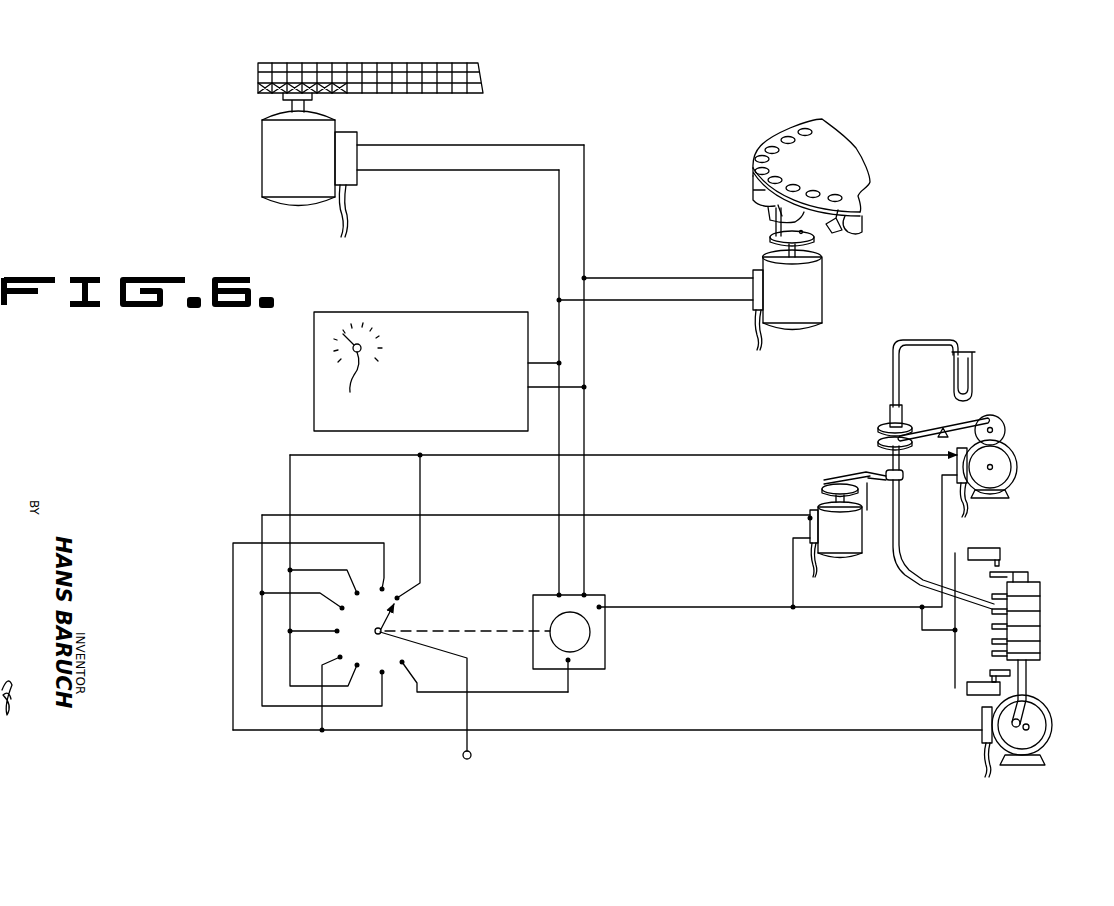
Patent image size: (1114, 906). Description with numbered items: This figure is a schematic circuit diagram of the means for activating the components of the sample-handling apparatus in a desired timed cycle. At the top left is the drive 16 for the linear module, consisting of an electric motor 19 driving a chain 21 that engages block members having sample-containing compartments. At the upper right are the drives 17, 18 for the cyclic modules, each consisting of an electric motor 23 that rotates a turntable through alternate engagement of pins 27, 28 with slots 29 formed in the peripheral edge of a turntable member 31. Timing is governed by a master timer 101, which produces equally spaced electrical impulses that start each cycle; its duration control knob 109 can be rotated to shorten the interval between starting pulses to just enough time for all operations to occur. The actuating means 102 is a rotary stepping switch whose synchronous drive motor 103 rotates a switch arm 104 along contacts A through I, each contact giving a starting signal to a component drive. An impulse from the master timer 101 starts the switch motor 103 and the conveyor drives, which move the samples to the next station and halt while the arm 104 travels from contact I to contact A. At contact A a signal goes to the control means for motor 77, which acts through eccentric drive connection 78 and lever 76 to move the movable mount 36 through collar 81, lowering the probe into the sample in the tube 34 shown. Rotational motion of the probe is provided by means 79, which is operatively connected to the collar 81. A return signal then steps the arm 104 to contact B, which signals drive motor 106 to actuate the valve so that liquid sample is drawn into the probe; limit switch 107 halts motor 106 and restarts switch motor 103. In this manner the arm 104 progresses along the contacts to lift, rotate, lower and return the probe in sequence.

The drive 16 is at (281, 176).
The electric motor 19 is at (300, 203).
The chain 21 is at (381, 66).
The drive 17 is at (826, 235).
The drive 18 is at (813, 235).
The electric motor 23 is at (806, 321).
The pin 27 is at (770, 212).
The pin 28 is at (773, 233).
The slot 29 is at (836, 236).
The turntable member 31 is at (850, 224).
The test tube 34 is at (969, 353).
The movable mount 36 is at (896, 531).
The lever 76 is at (985, 420).
The motor 77 is at (1021, 469).
The eccentric drive connection 78 is at (1009, 426).
The rotational motion means 79 is at (840, 558).
The collar 81 is at (880, 433).
The master timer 101 is at (421, 354).
The actuating means 102 is at (561, 606).
The synchronous drive motor 103 is at (590, 640).
The switch arm 104 is at (396, 622).
The drive motor 106 is at (1053, 734).
The limit switch 107 is at (991, 553).
The duration control knob 109 is at (352, 369).